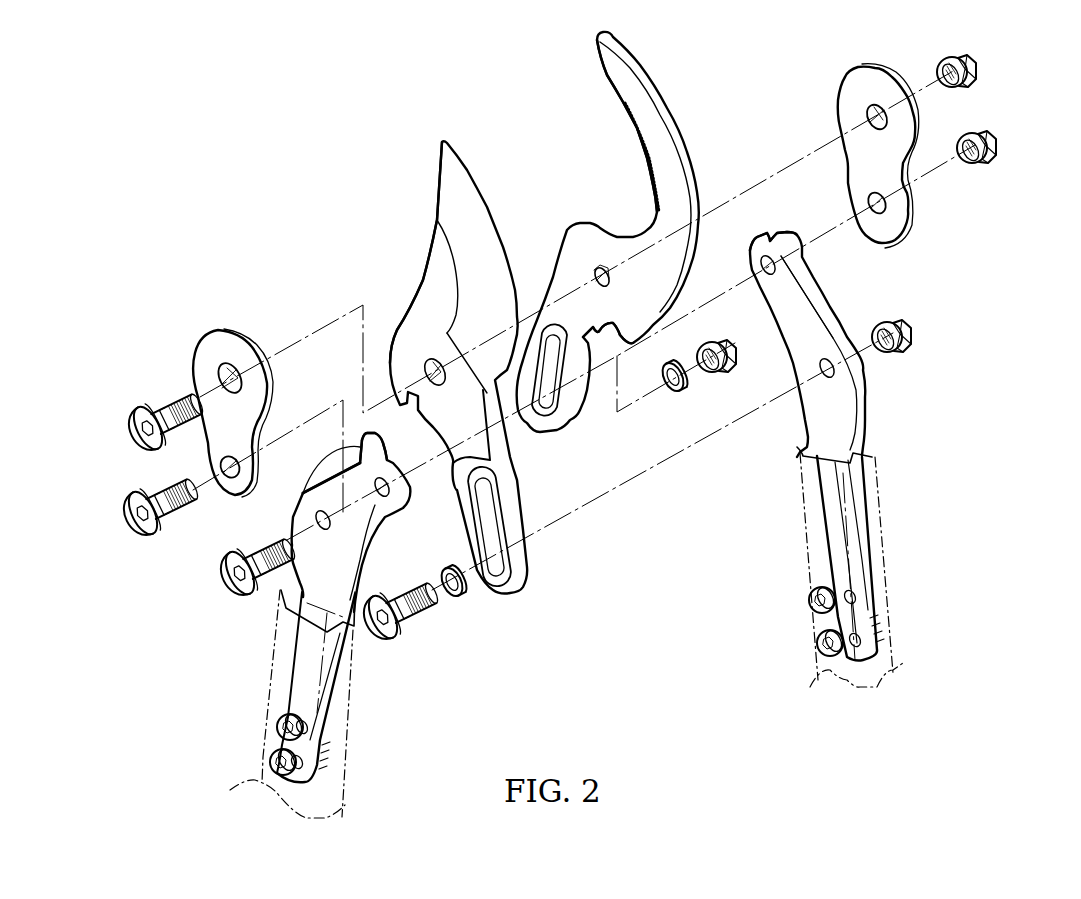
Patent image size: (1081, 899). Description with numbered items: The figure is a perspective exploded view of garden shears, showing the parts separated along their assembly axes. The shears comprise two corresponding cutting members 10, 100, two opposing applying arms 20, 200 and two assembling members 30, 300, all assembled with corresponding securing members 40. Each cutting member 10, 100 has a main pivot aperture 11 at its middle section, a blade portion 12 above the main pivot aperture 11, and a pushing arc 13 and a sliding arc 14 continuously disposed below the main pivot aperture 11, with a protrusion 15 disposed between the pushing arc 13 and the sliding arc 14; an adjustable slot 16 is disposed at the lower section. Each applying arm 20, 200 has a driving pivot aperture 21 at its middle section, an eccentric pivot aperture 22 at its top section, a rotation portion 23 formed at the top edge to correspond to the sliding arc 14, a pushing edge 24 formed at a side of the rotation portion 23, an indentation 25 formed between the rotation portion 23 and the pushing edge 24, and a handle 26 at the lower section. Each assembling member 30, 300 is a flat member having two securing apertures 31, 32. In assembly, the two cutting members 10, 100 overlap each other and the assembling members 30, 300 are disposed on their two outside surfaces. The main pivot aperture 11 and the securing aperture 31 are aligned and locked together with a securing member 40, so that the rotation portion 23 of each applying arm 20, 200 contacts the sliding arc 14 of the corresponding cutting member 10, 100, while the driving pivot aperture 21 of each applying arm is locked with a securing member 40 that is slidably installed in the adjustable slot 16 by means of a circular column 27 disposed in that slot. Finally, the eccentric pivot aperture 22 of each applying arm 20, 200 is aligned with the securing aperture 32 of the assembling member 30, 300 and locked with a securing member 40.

The cutting member 10 is at (441, 146).
The cutting member 100 is at (621, 94).
The main pivot aperture 11 is at (420, 352).
The blade portion 12 is at (472, 215).
The pushing arc 13 is at (427, 374).
The sliding arc 14 is at (583, 380).
The protrusion 15 is at (583, 337).
The adjustable slot 16 is at (532, 400).
The applying arm 20 is at (302, 642).
The applying arm 200 is at (836, 497).
The driving pivot aperture 21 is at (317, 517).
The eccentric pivot aperture 22 is at (381, 496).
The rotation portion 23 is at (407, 493).
The pushing edge 24 is at (345, 452).
The indentation 25 is at (380, 447).
The handle 26 is at (349, 740).
The circular column 27 is at (462, 596).
The assembling member 30 is at (200, 338).
The assembling member 300 is at (856, 92).
The securing aperture 31 is at (223, 373).
The securing aperture 32 is at (223, 467).
The securing member 40 is at (127, 422).